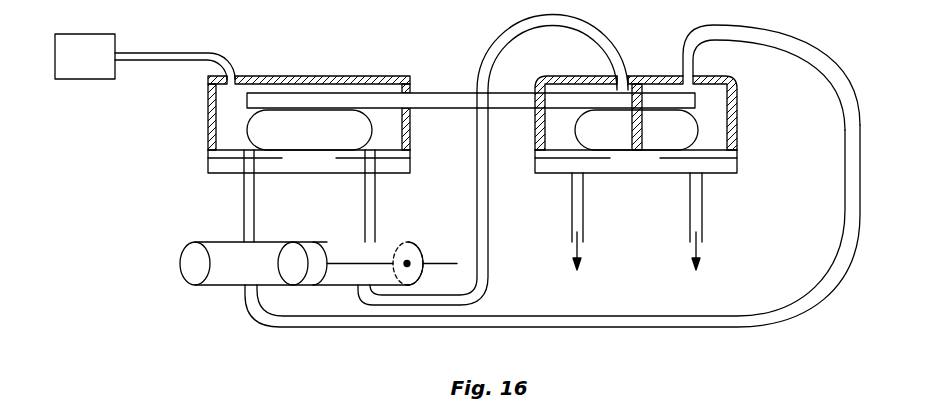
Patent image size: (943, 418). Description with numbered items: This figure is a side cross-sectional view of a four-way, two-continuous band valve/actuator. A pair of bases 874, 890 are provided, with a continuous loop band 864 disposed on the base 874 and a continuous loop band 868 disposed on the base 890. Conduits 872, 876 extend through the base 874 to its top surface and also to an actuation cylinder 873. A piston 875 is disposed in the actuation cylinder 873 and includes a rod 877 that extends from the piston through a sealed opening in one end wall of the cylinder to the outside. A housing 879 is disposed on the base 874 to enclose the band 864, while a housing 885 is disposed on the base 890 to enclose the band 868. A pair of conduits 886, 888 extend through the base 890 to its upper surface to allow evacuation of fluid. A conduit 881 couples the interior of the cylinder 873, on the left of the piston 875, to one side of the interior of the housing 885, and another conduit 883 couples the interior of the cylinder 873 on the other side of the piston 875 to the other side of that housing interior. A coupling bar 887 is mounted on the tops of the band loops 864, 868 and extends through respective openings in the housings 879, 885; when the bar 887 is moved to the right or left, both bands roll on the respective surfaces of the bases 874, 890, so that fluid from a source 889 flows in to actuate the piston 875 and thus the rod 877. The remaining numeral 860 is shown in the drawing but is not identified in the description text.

The rod 860 is at (507, 100).
The continuous loop band 864 is at (247, 125).
The continuous loop band 868 is at (700, 123).
The conduit 872 is at (242, 193).
The actuation cylinder 873 is at (187, 268).
The base 874 is at (310, 173).
The piston 875 is at (288, 265).
The conduit 876 is at (370, 205).
The rod 877 is at (433, 266).
The housing 879 is at (305, 76).
The conduit 881 is at (637, 317).
The conduit 883 is at (517, 40).
The housing 885 is at (725, 77).
The conduit 886 is at (575, 213).
The coupling bar 887 is at (432, 110).
The conduit 888 is at (695, 192).
The source 889 is at (55, 60).
The base 890 is at (628, 173).